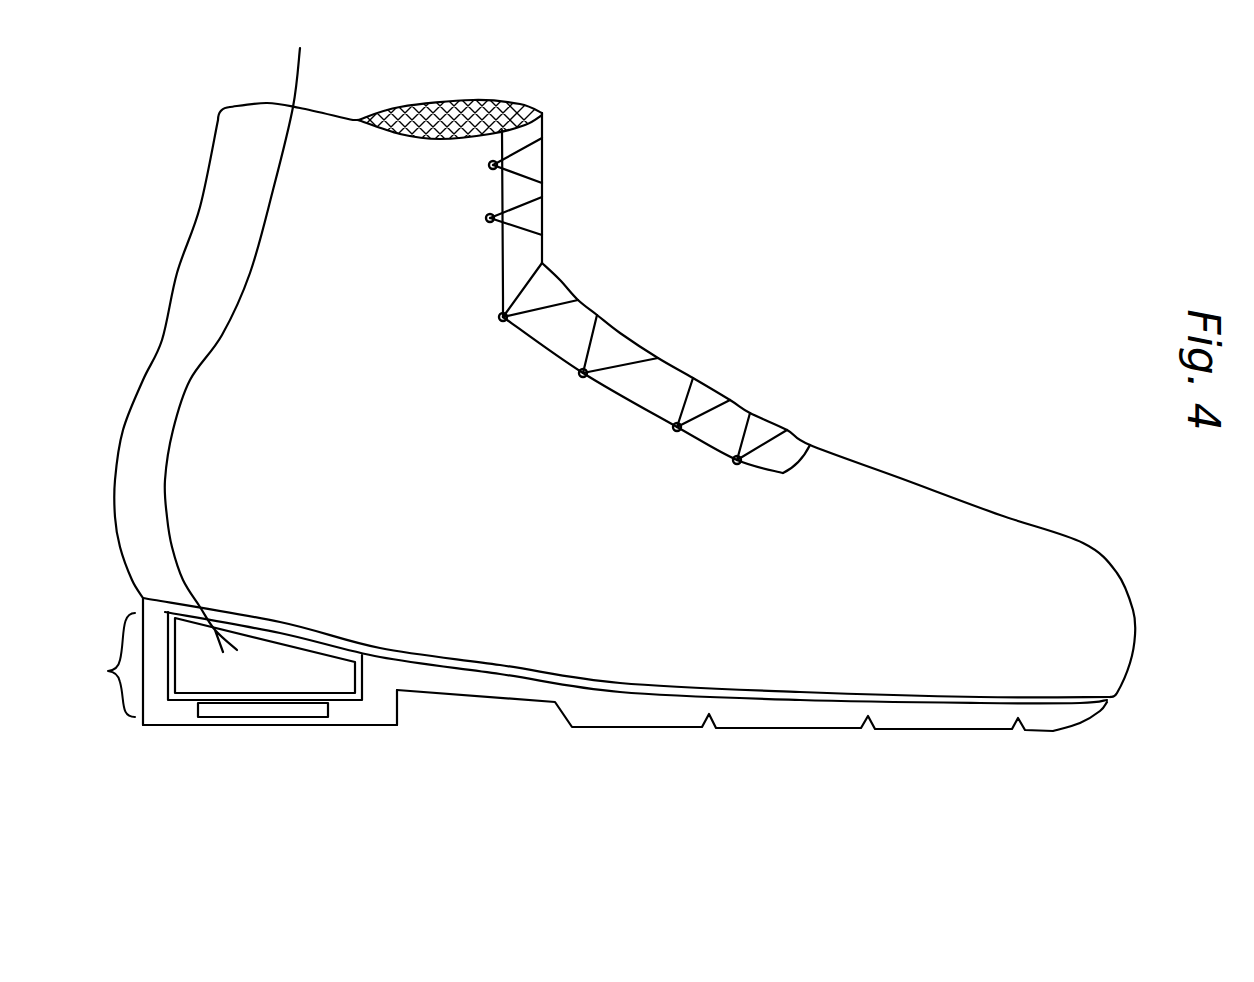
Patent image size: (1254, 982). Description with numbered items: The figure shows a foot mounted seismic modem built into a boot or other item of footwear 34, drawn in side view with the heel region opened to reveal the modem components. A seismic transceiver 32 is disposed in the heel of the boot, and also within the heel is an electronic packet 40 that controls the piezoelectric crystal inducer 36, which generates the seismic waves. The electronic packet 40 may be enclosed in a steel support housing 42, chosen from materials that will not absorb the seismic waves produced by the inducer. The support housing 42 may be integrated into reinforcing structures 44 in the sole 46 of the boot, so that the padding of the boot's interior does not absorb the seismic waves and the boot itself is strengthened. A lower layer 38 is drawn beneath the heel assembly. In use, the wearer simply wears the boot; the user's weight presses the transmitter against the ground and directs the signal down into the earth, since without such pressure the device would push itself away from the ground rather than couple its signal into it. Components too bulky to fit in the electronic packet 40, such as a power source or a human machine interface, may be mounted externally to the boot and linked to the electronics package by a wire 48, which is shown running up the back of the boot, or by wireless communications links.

The seismic transceiver 32 is at (106, 665).
The boot or other item of footwear 34 is at (367, 685).
The piezoelectric crystal inducer 36 is at (208, 705).
The bottom plate 38 is at (253, 725).
The electronic packet 40 is at (280, 677).
The steel support housing 42 is at (375, 708).
The reinforcing structures 44 is at (750, 697).
The sole 46 is at (635, 717).
The wire 48 is at (220, 335).